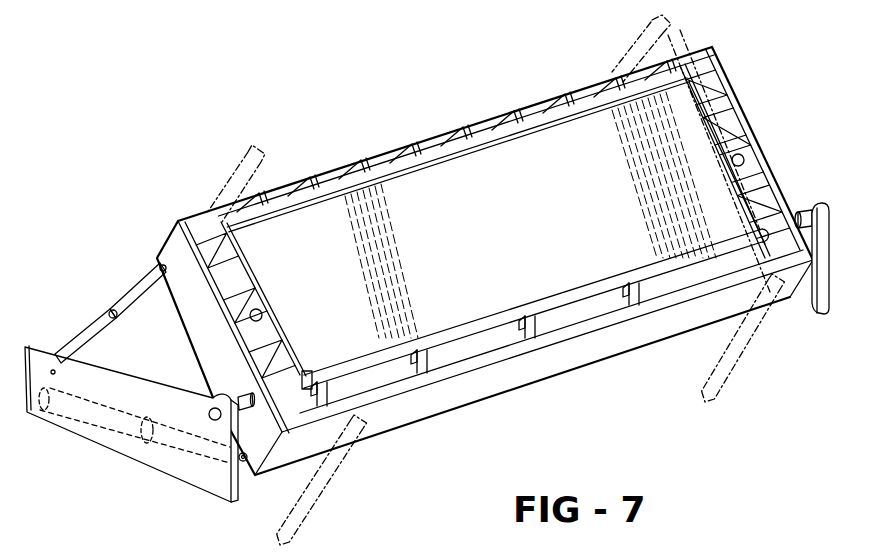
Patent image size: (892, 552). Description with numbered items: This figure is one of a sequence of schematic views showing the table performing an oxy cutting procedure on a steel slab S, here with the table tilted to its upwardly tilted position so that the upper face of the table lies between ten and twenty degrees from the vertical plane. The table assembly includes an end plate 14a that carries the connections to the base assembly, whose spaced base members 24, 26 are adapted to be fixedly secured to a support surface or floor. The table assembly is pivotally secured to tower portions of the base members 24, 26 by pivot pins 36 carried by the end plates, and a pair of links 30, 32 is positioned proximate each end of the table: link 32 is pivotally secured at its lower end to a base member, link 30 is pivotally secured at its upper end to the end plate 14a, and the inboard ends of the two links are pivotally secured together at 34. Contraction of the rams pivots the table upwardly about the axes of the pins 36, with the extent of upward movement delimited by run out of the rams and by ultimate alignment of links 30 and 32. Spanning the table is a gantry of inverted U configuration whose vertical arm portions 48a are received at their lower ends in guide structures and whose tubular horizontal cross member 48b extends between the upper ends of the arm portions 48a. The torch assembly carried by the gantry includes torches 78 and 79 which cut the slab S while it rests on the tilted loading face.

The end plate 14a is at (485, 261).
The base member 24 is at (108, 441).
The base member 26 is at (808, 298).
The link 30 is at (158, 266).
The link 32 is at (77, 340).
The pivot connection of links 34 is at (110, 310).
The pivot pin 36 is at (270, 417).
The vertical arm portion 48a is at (230, 183).
The tubular horizontal cross member 48b is at (745, 198).
The torch 78 is at (265, 320).
The torch 79 is at (752, 173).
The steel slab S is at (453, 244).